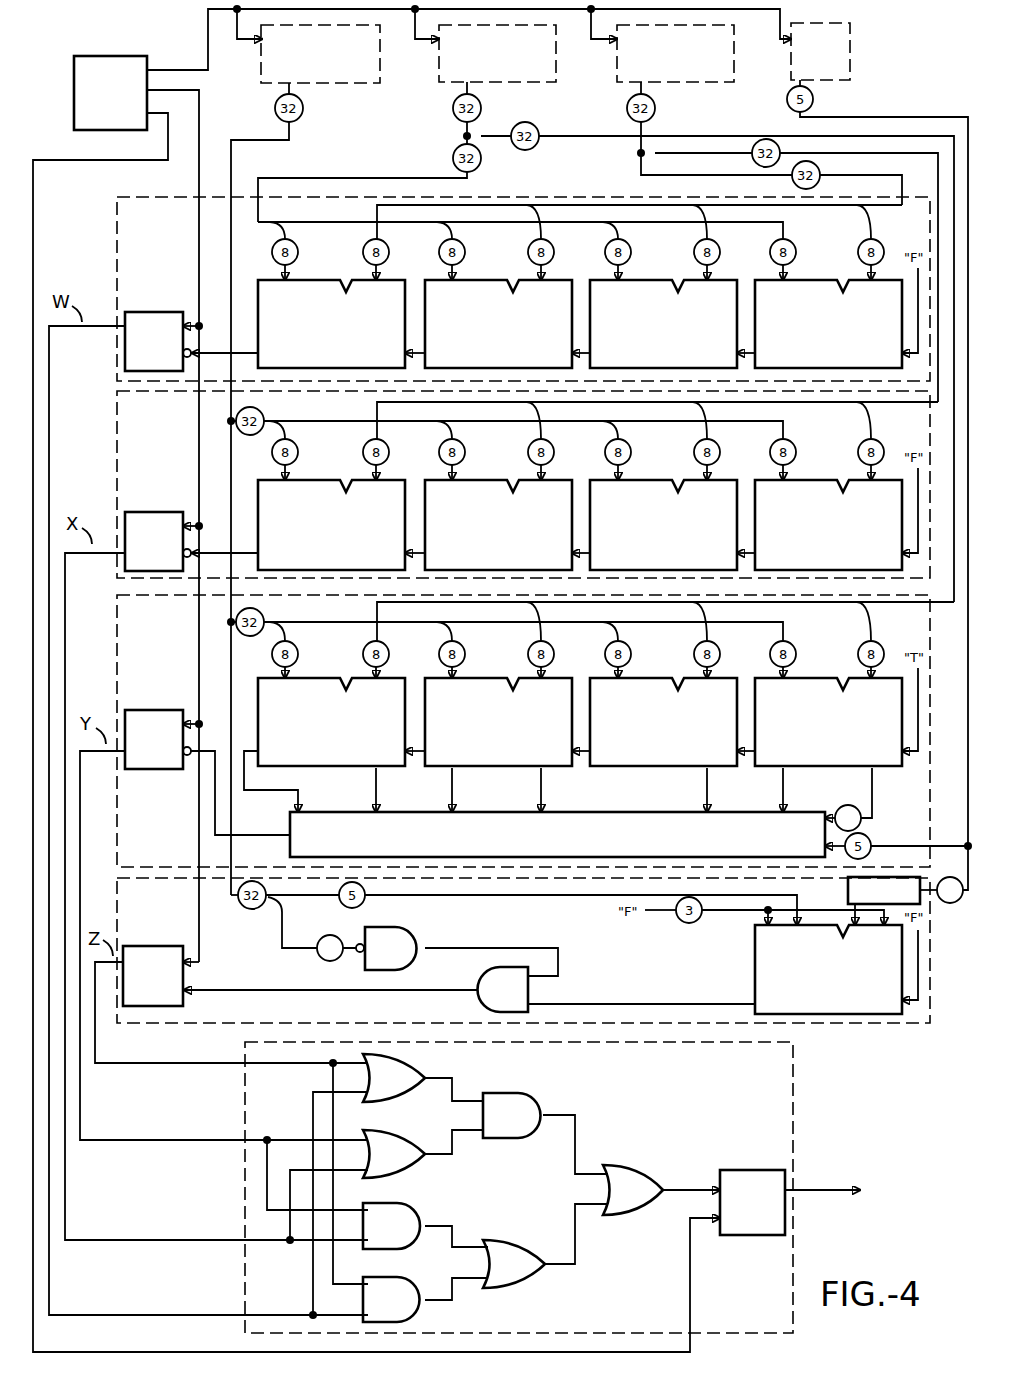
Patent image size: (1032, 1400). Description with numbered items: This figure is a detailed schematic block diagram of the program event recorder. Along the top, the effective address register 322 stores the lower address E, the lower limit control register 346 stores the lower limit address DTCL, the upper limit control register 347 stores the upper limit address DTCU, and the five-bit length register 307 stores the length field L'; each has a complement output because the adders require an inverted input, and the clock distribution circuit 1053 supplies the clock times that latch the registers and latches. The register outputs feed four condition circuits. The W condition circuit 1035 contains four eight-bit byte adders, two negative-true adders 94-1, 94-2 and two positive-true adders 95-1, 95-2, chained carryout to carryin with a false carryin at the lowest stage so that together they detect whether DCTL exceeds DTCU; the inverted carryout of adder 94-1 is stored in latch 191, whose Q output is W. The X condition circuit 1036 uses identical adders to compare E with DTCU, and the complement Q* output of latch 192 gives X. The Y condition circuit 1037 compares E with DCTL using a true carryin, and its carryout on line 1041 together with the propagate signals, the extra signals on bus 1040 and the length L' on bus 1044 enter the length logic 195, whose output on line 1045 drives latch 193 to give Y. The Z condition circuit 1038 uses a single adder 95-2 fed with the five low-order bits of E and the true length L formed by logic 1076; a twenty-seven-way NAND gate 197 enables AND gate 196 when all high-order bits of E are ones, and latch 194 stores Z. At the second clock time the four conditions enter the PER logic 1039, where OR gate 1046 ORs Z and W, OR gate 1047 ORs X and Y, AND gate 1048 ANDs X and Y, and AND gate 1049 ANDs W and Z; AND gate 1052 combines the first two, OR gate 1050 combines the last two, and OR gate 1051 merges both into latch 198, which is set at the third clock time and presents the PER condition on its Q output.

The clock distribution circuit 1053 is at (98, 58).
The effective address register 322 is at (380, 83).
The control register CR-10 346 is at (520, 82).
The control register CR-11 347 is at (700, 82).
The length register 307 is at (850, 45).
The bus 1044 is at (862, 118).
The W condition circuit 1035 is at (117, 214).
The X condition circuit 1036 is at (117, 432).
The Y condition circuit 1037 is at (117, 635).
The Z condition circuit 1038 is at (208, 1030).
The PER logic 1039 is at (245, 1108).
The latch circuit 191 is at (142, 324).
The latch 192 is at (142, 524).
The latch 193 is at (142, 722).
The latch 194 is at (144, 956).
The latch 198 is at (735, 1168).
The adder 94-1 is at (306, 285).
The adder 95-1 is at (474, 285).
The adder 94-2 is at (639, 285).
The adder 95-2 is at (802, 285).
The length logic 195 is at (290, 849).
The line 1041 is at (298, 806).
The line 1045 is at (215, 782).
The bus 1040 is at (872, 792).
The logic 1076 is at (848, 900).
The AND gate 196 is at (490, 984).
The NAND gate 197 is at (405, 935).
The OR gate 1046 is at (422, 1068).
The OR gate 1047 is at (412, 1168).
The AND gate 1048 is at (415, 1210).
The AND gate 1049 is at (415, 1308).
The OR gate 1050 is at (532, 1275).
The OR gate 1051 is at (620, 1168).
The AND gate 1052 is at (512, 1094).